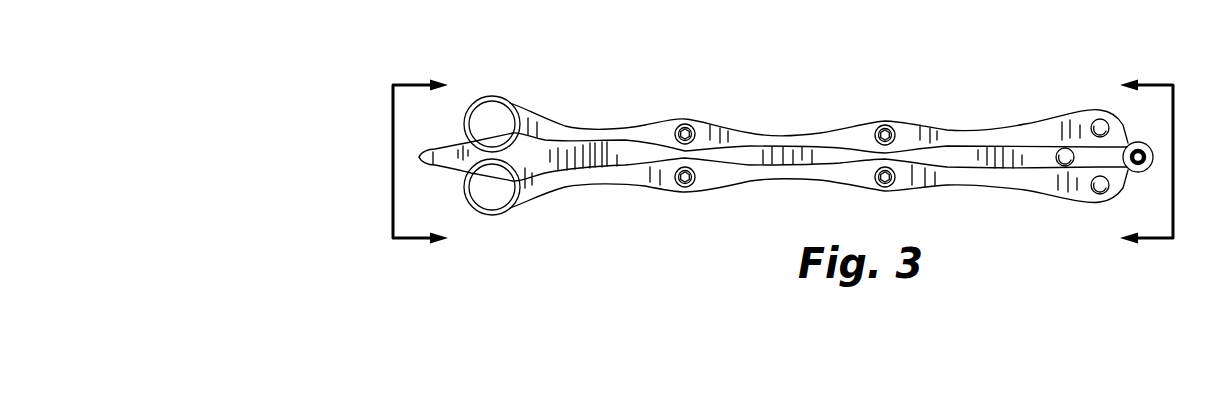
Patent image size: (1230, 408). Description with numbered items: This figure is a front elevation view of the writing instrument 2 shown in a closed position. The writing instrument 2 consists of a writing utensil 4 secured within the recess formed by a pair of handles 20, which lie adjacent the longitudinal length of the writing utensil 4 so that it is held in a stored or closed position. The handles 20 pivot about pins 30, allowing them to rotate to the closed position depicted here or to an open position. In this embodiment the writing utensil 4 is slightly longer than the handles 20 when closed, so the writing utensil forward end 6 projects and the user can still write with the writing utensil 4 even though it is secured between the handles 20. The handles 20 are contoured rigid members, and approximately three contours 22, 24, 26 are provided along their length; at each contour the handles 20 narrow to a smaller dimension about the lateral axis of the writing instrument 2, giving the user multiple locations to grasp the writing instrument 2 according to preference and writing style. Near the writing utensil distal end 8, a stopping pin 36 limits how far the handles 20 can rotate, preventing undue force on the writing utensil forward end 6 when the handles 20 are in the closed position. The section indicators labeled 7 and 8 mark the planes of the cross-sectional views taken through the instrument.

The writing instrument 2 is at (526, 228).
The writing utensil 4 is at (637, 157).
The writing utensil forward end 6 is at (427, 162).
The section line 7- 7 is at (434, 161).
The writing utensil distal end 8 is at (1128, 172).
The handles 20 is at (540, 130).
The contour 22 is at (610, 128).
The contour 24 is at (787, 138).
The contour 26 is at (947, 129).
The pins 30 is at (1099, 127).
The stopping pin 36 is at (1058, 151).